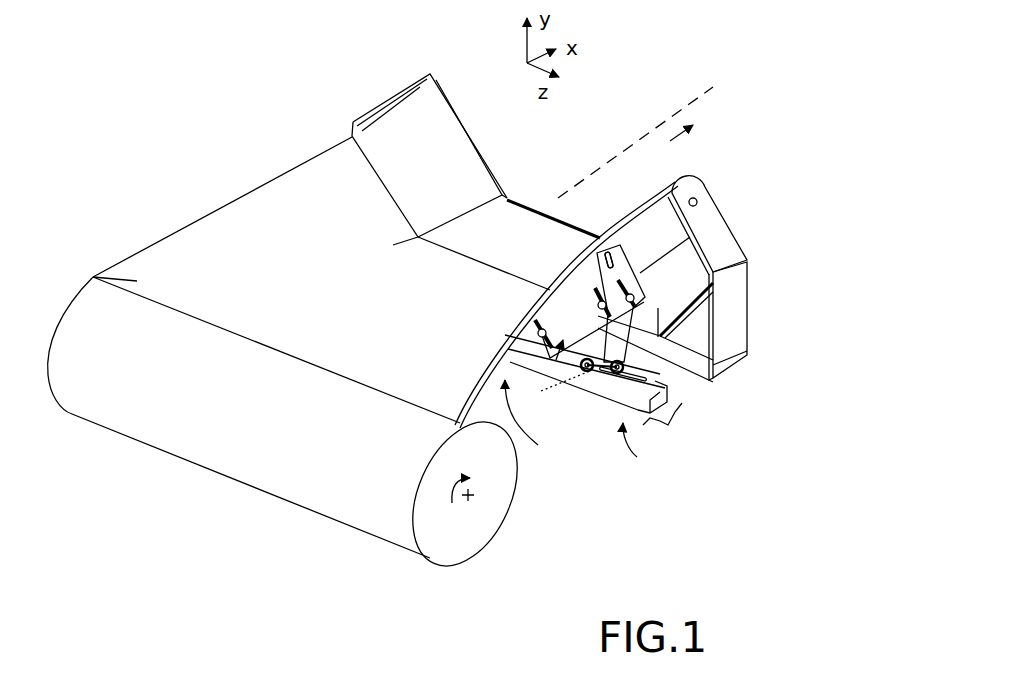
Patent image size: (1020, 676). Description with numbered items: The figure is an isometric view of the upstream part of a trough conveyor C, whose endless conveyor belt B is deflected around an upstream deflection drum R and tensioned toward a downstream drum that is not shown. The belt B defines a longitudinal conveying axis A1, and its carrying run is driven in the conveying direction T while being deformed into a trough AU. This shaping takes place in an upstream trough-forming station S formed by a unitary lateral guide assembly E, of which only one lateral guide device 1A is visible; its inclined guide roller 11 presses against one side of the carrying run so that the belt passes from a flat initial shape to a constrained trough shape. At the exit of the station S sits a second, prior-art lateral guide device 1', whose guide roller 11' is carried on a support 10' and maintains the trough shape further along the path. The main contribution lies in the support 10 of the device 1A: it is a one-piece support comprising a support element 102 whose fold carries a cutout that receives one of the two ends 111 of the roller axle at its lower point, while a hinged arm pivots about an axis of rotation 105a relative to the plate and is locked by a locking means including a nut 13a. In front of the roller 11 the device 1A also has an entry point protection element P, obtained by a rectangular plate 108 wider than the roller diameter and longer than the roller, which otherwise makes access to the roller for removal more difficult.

The conveyor belt B is at (260, 213).
The trough conveyor C is at (143, 211).
The upstream deflection drum R is at (435, 547).
The trough AU is at (536, 188).
The longitudinal conveying axis A1 is at (655, 127).
The conveying direction T is at (682, 141).
The guide roller 11' is at (702, 203).
The guide roller 11 is at (621, 269).
The end of the axle of the roller 111 is at (613, 247).
The nut 13a is at (637, 292).
The support element 102 is at (648, 308).
The rectangular plate 108 is at (590, 320).
The entry point protection element P is at (557, 387).
The axis of rotation 105a is at (569, 389).
The lateral guide assembly E is at (532, 421).
The support 10 is at (589, 410).
The lateral guide device 1A is at (644, 447).
The trough-forming station S is at (665, 425).
The support 10' is at (619, 385).
The lateral guide device 1' is at (685, 328).